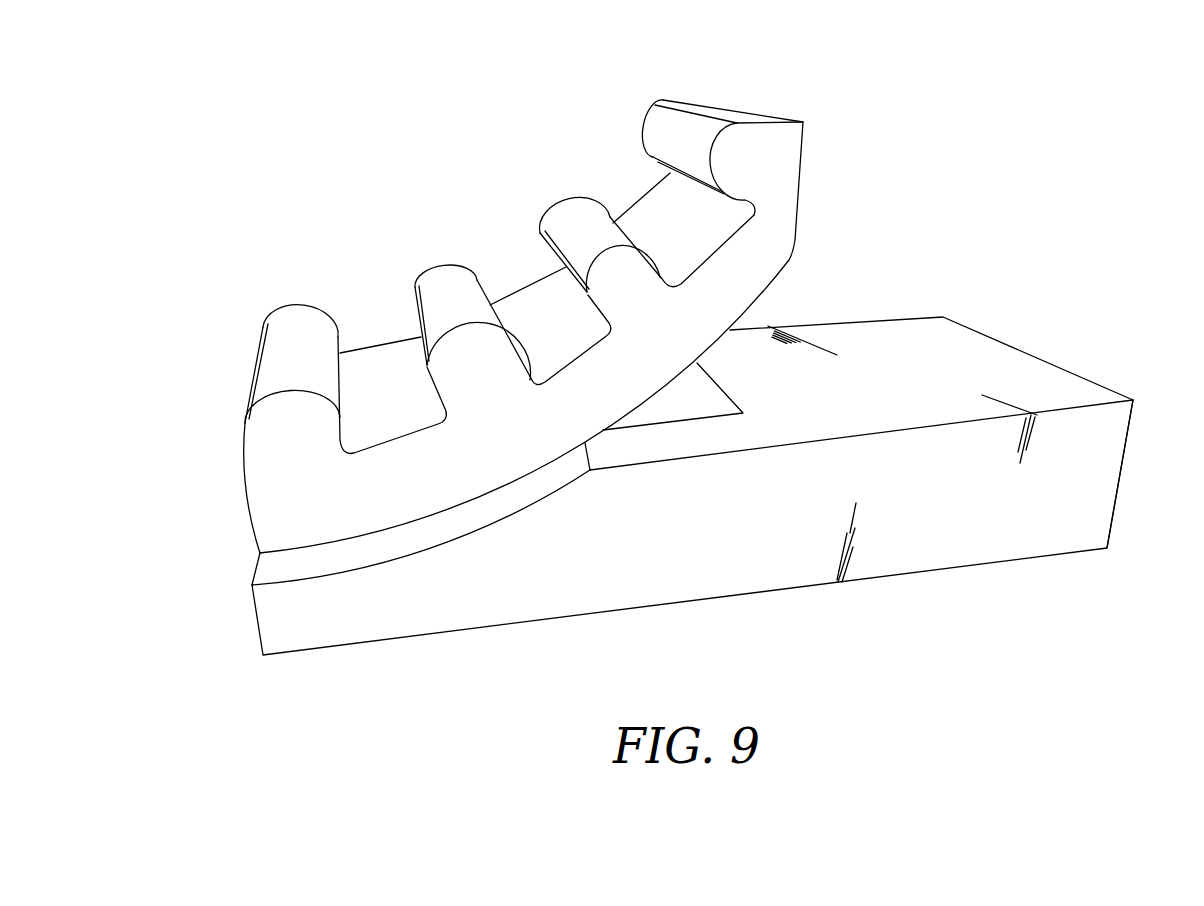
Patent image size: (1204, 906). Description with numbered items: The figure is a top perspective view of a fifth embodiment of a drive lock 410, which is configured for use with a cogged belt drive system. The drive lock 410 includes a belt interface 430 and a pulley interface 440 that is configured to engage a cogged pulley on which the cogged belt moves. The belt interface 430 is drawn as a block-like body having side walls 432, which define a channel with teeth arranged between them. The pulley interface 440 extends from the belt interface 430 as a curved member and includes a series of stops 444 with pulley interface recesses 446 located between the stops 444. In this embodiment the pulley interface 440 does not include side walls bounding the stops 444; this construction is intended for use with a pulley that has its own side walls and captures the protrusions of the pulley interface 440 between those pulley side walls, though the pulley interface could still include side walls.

The drive lock 410 is at (883, 102).
The belt interface 430 is at (1022, 573).
The side walls 432 is at (1085, 518).
The pulley interface 440 is at (628, 123).
The stops 444 is at (300, 318).
The pulley interface recesses 446 is at (643, 197).